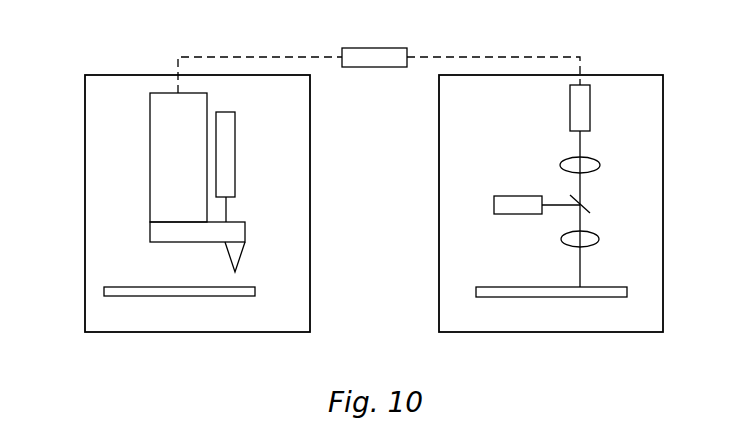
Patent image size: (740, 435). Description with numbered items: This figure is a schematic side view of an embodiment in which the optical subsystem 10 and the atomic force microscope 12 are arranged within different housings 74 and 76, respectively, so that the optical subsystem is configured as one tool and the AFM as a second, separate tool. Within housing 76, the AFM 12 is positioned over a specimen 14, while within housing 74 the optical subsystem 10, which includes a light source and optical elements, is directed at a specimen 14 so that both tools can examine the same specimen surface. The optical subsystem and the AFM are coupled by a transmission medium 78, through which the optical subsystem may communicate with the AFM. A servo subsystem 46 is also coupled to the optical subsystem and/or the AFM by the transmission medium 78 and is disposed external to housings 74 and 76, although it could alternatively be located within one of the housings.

The optical subsystem 10 is at (598, 143).
The atomic force microscope 12 is at (142, 179).
The specimen 14 is at (257, 287).
The servo subsystem 46 is at (374, 48).
The housing 74 is at (664, 216).
The housing 76 is at (85, 234).
The transmission medium 78 is at (487, 57).